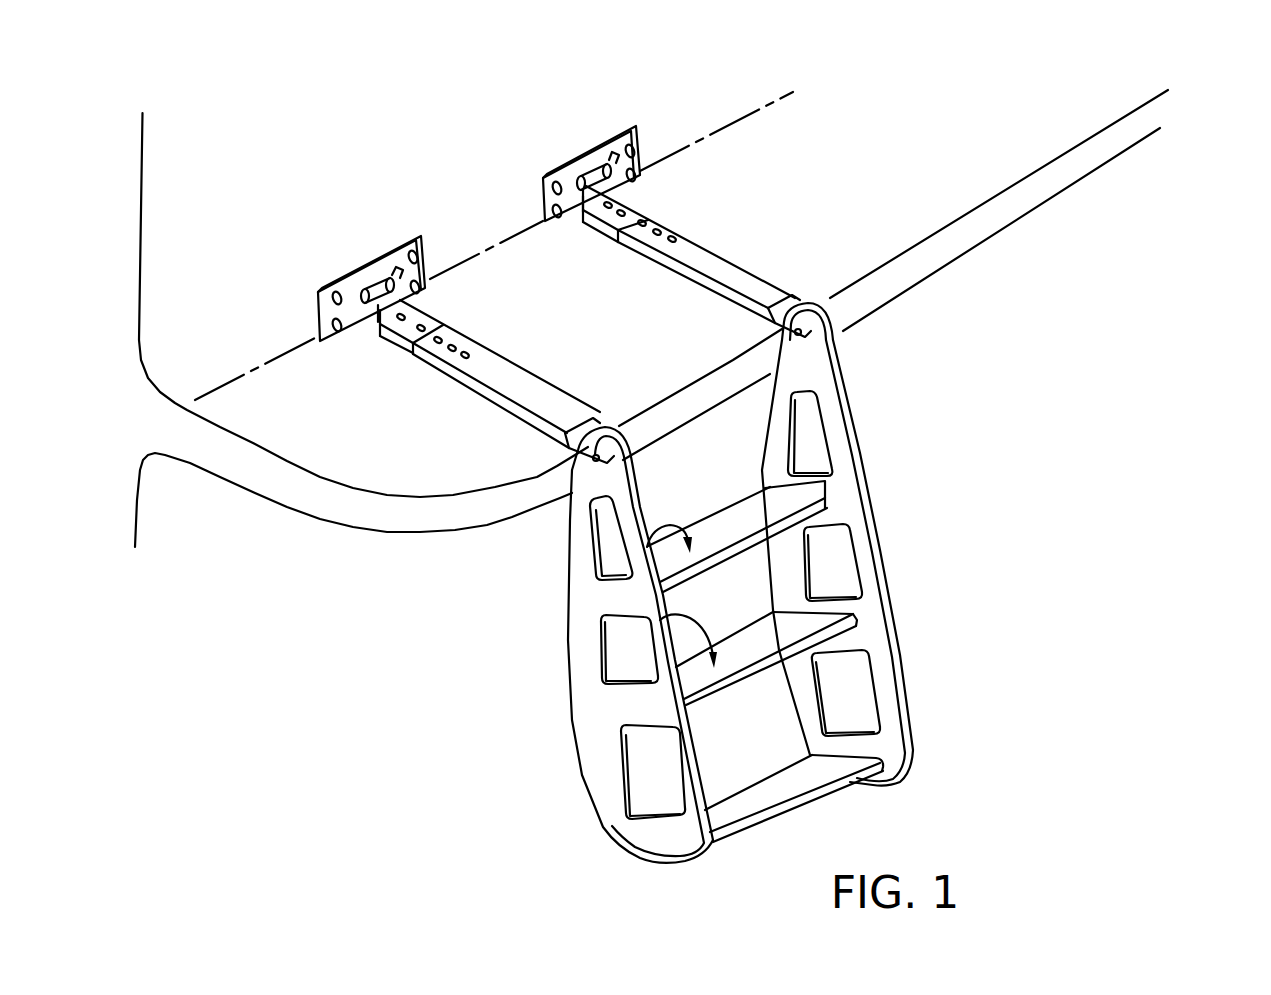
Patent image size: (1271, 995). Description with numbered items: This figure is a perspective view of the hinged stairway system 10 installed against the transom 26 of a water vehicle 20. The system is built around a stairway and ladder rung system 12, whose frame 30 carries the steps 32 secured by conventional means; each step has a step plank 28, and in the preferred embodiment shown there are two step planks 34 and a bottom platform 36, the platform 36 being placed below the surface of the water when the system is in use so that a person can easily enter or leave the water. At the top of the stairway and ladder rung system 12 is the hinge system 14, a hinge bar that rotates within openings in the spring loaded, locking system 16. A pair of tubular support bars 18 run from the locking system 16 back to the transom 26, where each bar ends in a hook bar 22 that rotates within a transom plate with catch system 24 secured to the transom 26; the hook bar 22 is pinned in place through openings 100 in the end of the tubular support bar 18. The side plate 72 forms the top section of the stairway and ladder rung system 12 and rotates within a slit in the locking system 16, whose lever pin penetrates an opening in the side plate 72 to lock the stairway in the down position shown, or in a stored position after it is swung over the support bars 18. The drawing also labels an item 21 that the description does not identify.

The hinged stairway system 10 is at (972, 332).
The stairway and ladder rung system 12 is at (730, 592).
The hinge system 14 is at (572, 495).
The spring loaded, locking system 16 is at (805, 302).
The tubular support bar 18 is at (712, 257).
The water vehicle 20 is at (1104, 53).
The truck bed rail 21 is at (300, 396).
The hook bar 22 is at (558, 289).
The transom plate with catch system 24 is at (640, 132).
The transom 26 is at (295, 161).
The step plank 28 is at (597, 618).
The frame 30 is at (872, 500).
The steps 32 is at (800, 478).
The step planks 34 is at (762, 507).
The platform 36 is at (820, 772).
The side plate 72 is at (818, 363).
The openings 100 is at (400, 322).